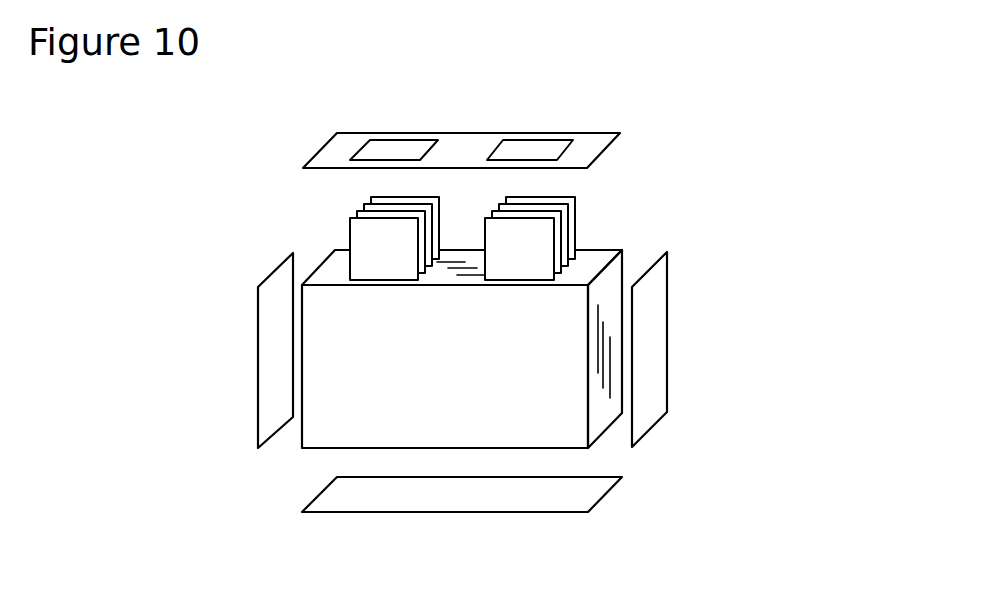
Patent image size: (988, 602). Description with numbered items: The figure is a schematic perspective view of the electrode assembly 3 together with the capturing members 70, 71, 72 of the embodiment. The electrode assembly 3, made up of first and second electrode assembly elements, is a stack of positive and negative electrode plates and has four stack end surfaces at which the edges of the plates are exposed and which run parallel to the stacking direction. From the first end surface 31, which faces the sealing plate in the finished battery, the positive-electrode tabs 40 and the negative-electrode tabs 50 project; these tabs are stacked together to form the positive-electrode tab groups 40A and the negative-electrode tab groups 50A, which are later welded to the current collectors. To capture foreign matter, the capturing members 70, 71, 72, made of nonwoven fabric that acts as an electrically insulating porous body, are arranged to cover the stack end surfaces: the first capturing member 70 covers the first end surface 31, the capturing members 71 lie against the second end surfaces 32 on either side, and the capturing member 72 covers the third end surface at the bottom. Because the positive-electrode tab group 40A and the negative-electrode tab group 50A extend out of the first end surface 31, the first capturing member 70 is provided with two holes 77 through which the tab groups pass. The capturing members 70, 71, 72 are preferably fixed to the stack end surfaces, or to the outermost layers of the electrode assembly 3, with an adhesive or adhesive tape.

The electrode assembly 3 is at (521, 379).
The first end surface 31 is at (597, 260).
The second end surfaces 32 is at (600, 423).
The positive-electrode tabs 40 is at (533, 242).
The positive-electrode tab groups 40A is at (653, 221).
The negative-electrode tabs 50 is at (372, 242).
The negative-electrode tab groups 50A is at (262, 226).
The first capturing member 70 is at (461, 110).
The capturing members 71 is at (268, 343).
The capturing member 72 is at (460, 507).
The holes 77 is at (417, 148).